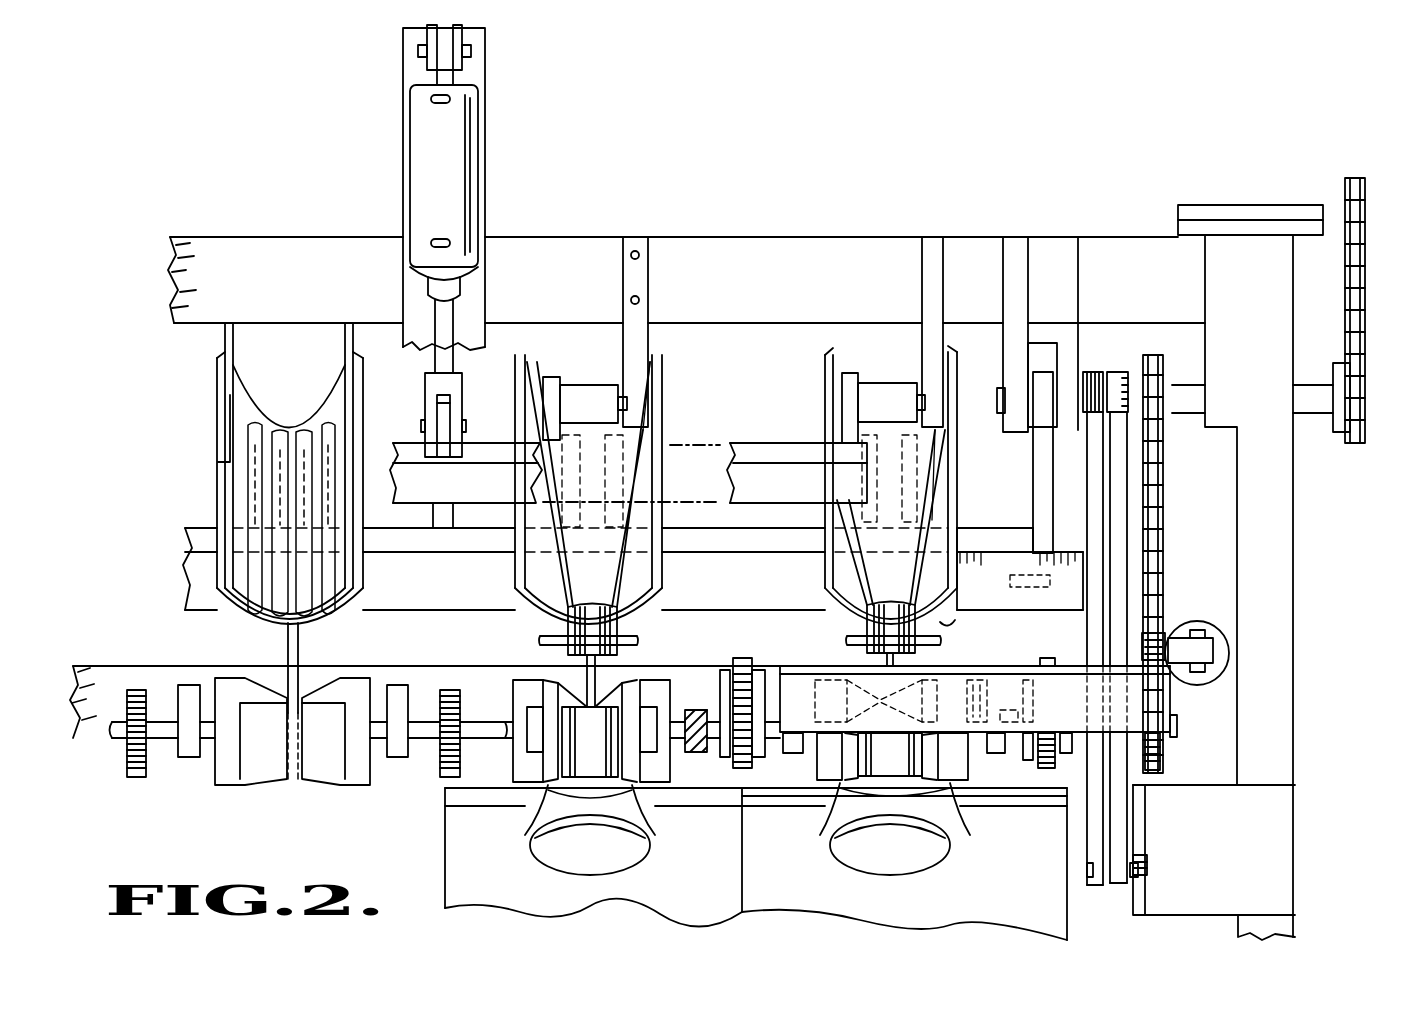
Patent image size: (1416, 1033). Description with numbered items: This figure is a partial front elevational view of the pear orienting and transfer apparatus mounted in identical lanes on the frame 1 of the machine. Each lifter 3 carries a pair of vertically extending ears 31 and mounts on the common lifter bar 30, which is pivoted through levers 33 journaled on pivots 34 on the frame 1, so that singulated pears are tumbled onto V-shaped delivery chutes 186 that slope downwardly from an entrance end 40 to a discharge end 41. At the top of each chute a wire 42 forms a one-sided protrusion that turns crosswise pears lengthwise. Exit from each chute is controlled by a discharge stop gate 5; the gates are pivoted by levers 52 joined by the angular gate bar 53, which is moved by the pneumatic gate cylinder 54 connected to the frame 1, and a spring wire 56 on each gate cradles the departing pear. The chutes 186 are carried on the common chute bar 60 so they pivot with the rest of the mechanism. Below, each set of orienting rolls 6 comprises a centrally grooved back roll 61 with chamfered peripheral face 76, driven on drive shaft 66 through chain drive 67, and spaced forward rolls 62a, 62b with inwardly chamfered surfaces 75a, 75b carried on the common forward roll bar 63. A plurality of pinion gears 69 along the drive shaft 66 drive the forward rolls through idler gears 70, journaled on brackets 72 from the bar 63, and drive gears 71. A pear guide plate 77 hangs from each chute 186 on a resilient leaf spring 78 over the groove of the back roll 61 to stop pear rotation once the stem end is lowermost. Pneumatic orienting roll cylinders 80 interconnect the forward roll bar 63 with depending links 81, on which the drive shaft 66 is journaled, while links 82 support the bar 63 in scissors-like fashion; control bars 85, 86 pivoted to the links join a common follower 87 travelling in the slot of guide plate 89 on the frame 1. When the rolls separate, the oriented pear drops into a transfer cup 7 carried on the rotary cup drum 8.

The machine frame 1 is at (1293, 540).
The lifter 3 is at (597, 226).
The discharge stop gate 5 is at (620, 567).
The set of orienting rolls 6 is at (240, 795).
The transfer cup 7 is at (584, 868).
The rotary cup drum 8 is at (672, 903).
The lifter bar 30 is at (1003, 532).
The vertically extending ears 31 is at (660, 438).
The lever 33 is at (1040, 465).
The pivot 34 is at (1000, 400).
The entrance end 40 is at (836, 372).
The discharge end 41 is at (955, 620).
The wire 42 is at (225, 428).
The lever 52 is at (551, 377).
The gate bar 53 is at (486, 447).
The gate cylinder 54 is at (420, 130).
The spring wire 56 is at (637, 641).
The chute bar 60 is at (190, 578).
The back roll 61 is at (355, 680).
The forward roll 62a is at (545, 693).
The forward roll 62b is at (660, 765).
The forward roll bar 63 is at (1170, 698).
The drive shaft 66 is at (166, 742).
The chain drive 67 is at (1368, 290).
The pinion gear 69 is at (135, 780).
The idler gear 70 is at (748, 660).
The drive gear 71 is at (740, 772).
The bracket 72 is at (722, 710).
The peripheral surface of forward roll 75a is at (555, 790).
The peripheral surface of forward roll 75b is at (607, 790).
The back roll peripheral face 76 is at (267, 683).
The pear guide plate 77 is at (310, 772).
The resilient leaf spring 78 is at (300, 645).
The orienting roll cylinder 80 is at (1222, 642).
The depending link 81 is at (1113, 490).
The link 82 is at (1097, 575).
The control bar 85 is at (1090, 840).
The control bar 86 is at (1120, 885).
The follower 87 is at (1150, 865).
The guide plate 89 is at (1147, 824).
The delivery chute 186 is at (235, 590).